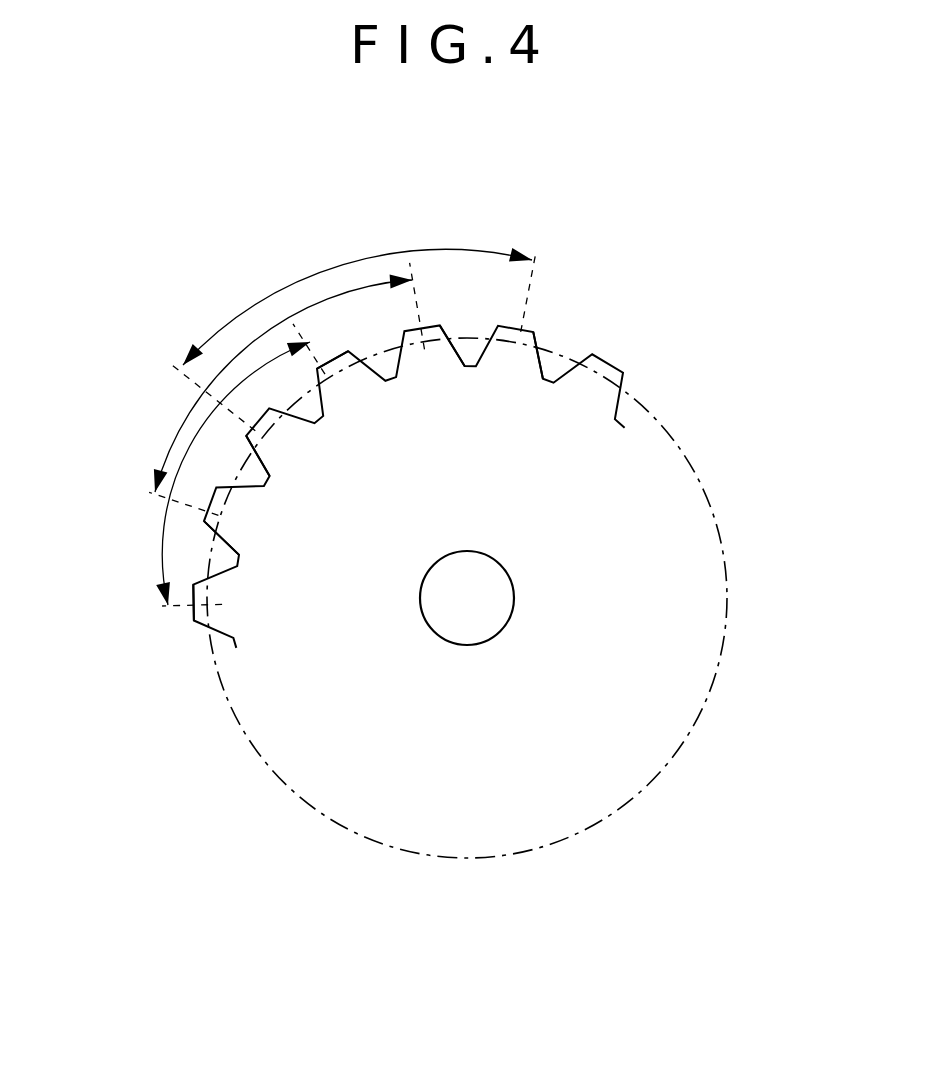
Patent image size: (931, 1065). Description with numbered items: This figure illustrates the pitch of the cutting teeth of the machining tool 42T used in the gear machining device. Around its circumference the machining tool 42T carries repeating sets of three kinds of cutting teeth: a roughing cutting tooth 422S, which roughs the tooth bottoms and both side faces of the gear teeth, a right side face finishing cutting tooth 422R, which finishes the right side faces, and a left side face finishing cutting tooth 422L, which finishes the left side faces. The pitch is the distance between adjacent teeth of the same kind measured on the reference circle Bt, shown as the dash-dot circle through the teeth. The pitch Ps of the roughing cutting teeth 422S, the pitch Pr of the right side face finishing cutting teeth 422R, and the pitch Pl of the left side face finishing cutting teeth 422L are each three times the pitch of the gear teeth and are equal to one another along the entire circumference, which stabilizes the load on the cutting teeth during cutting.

The machining tool 42T is at (611, 252).
The roughing cutting teeth 422S is at (343, 350).
The right side face finishing cutting teeth 422R is at (433, 323).
The left side face finishing cutting teeth 422L is at (533, 332).
The reference circle Bt is at (662, 420).
The pitch of the left side face finishing cutting teeth Pl is at (355, 339).
The pitch of the right side face finishing cutting teeth Pr is at (281, 389).
The pitch of the roughing cutting teeth Ps is at (231, 465).